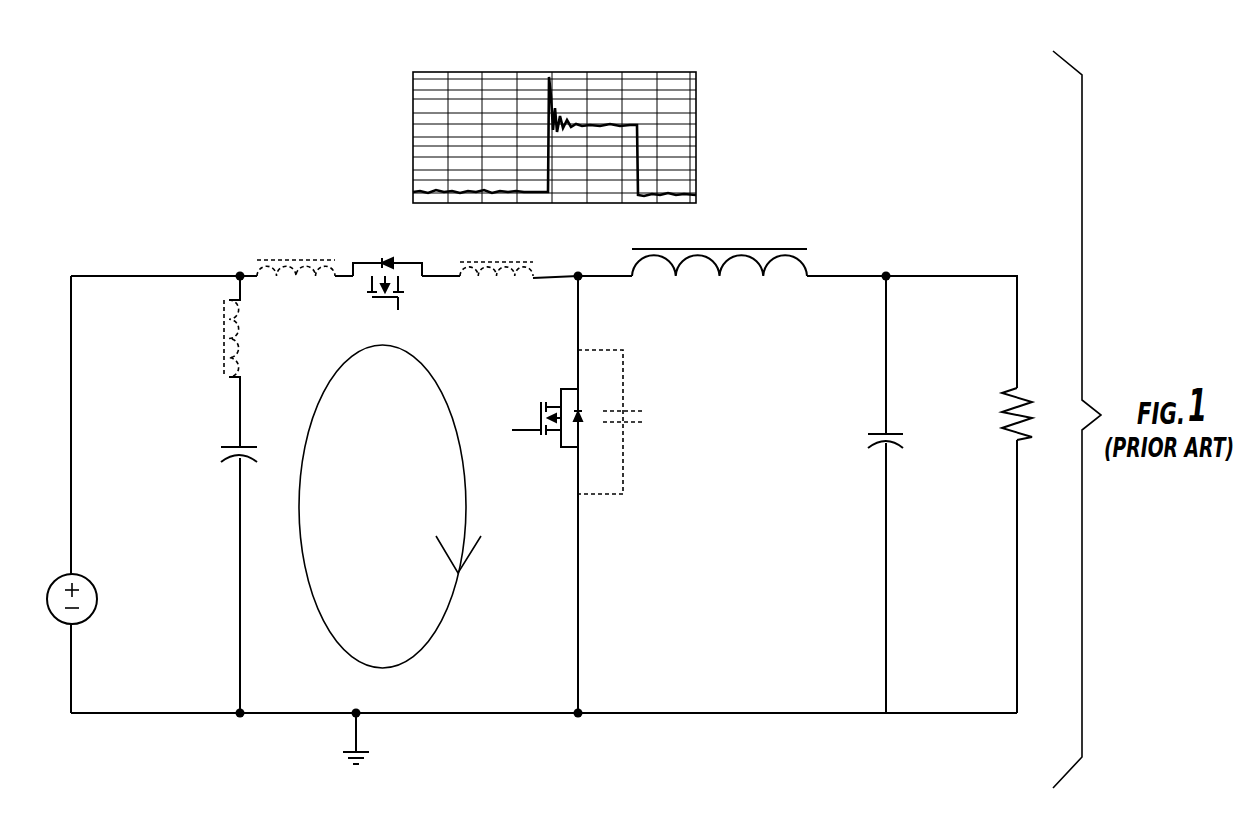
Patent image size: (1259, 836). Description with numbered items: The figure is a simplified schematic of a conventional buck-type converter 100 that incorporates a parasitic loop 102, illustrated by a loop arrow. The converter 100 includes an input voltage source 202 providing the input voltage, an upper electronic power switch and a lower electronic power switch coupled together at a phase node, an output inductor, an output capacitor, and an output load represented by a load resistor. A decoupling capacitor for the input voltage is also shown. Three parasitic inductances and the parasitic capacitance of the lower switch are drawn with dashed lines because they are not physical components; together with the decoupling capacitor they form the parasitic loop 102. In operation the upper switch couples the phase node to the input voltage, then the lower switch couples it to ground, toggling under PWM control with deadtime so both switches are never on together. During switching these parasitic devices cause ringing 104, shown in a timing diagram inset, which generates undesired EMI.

The conventional buck-type converter 100 is at (563, 796).
The parasitic loop 102 is at (454, 593).
The ringing 104 is at (606, 64).
The input voltage source 202 is at (97, 594).